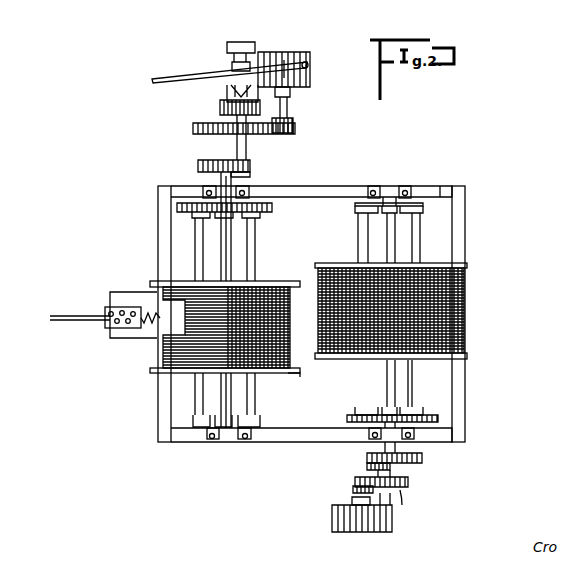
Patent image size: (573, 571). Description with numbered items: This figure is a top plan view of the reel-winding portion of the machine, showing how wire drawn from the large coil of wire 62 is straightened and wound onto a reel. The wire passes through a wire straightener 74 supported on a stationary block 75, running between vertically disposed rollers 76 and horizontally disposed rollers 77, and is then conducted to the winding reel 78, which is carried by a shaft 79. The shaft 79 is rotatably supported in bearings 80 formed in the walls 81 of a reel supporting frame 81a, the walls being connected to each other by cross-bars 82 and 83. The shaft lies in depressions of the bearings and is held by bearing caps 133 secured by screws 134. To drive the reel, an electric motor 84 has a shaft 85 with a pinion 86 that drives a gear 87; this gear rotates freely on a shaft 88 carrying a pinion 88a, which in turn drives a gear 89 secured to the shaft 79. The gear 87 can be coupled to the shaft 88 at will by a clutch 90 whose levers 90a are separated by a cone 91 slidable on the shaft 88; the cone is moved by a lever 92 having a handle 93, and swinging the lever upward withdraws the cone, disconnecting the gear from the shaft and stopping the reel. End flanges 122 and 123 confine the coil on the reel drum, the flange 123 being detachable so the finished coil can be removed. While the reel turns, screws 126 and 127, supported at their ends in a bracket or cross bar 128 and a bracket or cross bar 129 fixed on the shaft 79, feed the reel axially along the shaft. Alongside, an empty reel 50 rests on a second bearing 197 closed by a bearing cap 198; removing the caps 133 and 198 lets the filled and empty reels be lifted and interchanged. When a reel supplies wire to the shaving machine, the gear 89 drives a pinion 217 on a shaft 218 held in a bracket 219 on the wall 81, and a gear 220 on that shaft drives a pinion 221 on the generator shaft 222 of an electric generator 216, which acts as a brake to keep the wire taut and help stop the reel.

The reel 50 is at (473, 305).
The large coil of wire 62 is at (163, 373).
The wire straightener 74 is at (103, 325).
The stationary block 75 is at (113, 339).
The vertically disposed rollers 76 is at (110, 300).
The horizontally disposed rollers 77 is at (152, 325).
The winding reel 78 is at (299, 278).
The shaft 79 is at (233, 238).
The bearings 80 is at (214, 190).
The walls 81 is at (337, 186).
The reel supporting frame 81a is at (446, 190).
The cross-bar 82 is at (158, 415).
The cross-bar 83 is at (465, 392).
The electric motor 84 is at (303, 58).
The shaft 85 is at (290, 105).
The pinion 86 is at (293, 128).
The gear 87 is at (278, 135).
The shaft 88 is at (237, 147).
The pinion 88a is at (252, 172).
The gear 89 is at (204, 162).
The clutch 90 is at (220, 92).
The levers 90a is at (220, 106).
The cone 91 is at (233, 72).
The lever 92 is at (285, 58).
The handle 93 is at (158, 78).
The end flange 122 is at (293, 290).
The end flange 123 is at (296, 376).
The screw 126 is at (258, 252).
The screw 127 is at (197, 252).
The bracket or cross bar 128 is at (272, 208).
The bracket or cross bar 129 is at (356, 212).
The bearing cap 133 is at (236, 190).
The screws 134 is at (209, 442).
The bearing 197 is at (401, 182).
The bearing cap 198 is at (380, 186).
The electric generator 216 is at (365, 532).
The pinion 217 is at (404, 484).
The shaft 218 is at (378, 478).
The bracket 219 is at (368, 466).
The gear 220 is at (402, 494).
The pinion 221 is at (353, 490).
The generator shaft 222 is at (352, 502).